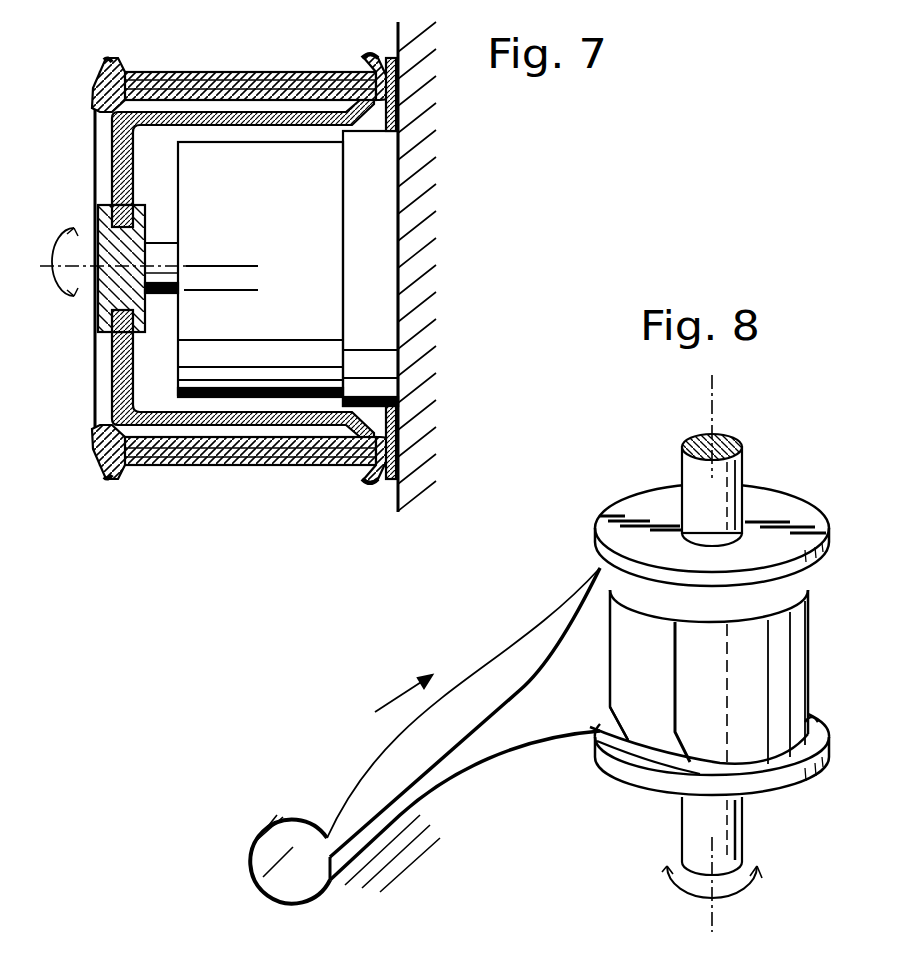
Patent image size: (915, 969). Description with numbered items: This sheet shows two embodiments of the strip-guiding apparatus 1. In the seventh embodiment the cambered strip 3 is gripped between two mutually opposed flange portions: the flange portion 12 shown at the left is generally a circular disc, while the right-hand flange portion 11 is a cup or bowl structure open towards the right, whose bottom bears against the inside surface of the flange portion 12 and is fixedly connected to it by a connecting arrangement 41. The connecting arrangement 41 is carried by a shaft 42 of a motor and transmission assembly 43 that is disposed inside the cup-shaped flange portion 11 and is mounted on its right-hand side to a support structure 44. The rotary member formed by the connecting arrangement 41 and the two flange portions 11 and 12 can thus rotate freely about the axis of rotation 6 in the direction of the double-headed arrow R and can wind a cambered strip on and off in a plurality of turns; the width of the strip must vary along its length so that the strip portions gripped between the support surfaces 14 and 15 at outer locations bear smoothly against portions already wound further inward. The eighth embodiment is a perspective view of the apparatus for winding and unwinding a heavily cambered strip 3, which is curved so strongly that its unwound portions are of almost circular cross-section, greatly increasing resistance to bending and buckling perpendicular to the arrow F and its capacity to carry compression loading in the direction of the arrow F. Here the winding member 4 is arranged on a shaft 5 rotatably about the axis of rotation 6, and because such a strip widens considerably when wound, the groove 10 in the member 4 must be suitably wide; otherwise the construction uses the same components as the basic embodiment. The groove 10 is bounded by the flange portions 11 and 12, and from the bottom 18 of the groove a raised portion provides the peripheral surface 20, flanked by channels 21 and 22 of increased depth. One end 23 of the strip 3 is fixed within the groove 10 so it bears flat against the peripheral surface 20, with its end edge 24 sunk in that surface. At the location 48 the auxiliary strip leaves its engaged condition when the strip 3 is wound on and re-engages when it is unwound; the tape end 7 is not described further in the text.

In FIG. 8, the apparatus 1 is at (812, 500).
In FIG. 7, the cambered strip 3 is at (236, 72).
In FIG. 8, the cambered strip 3 is at (306, 796).
In FIG. 8, the winding member 4 is at (620, 510).
In FIG. 8, the shaft 5 is at (740, 482).
In FIG. 7, the axis of rotation 6 is at (44, 274).
In FIG. 8, the axis of rotation 6 is at (718, 408).
In FIG. 8, the tape end 7 is at (626, 713).
In FIG. 8, the groove 10 is at (812, 650).
In FIG. 7, the flange portion 11 is at (380, 58).
In FIG. 8, the flange portion 11 is at (832, 548).
In FIG. 7, the flange portion 12 is at (106, 58).
In FIG. 8, the flange portion 12 is at (830, 756).
In FIG. 7, the support surface 14 is at (352, 60).
In FIG. 7, the support surface 15 is at (122, 72).
In FIG. 8, the support surface 15 is at (818, 722).
In FIG. 8, the bottom of the groove 18 is at (680, 798).
In FIG. 8, the peripheral surface 20 is at (634, 716).
In FIG. 8, the channel 21 is at (600, 568).
In FIG. 8, the channel 22 is at (653, 742).
In FIG. 8, the end of the strip 23 is at (692, 622).
In FIG. 8, the end edge 24 is at (672, 682).
In FIG. 7, the connecting arrangement 41 is at (103, 318).
In FIG. 7, the shaft of the motor and transmission assembly 42 is at (165, 294).
In FIG. 7, the motor and transmission assembly 43 is at (285, 150).
In FIG. 7, the support structure 44 is at (412, 262).
In FIG. 8, the location of auxiliary strip engagement 48 is at (558, 734).